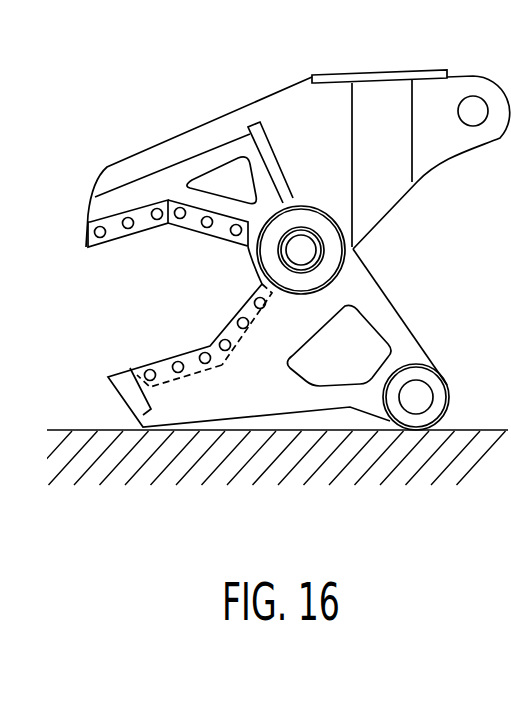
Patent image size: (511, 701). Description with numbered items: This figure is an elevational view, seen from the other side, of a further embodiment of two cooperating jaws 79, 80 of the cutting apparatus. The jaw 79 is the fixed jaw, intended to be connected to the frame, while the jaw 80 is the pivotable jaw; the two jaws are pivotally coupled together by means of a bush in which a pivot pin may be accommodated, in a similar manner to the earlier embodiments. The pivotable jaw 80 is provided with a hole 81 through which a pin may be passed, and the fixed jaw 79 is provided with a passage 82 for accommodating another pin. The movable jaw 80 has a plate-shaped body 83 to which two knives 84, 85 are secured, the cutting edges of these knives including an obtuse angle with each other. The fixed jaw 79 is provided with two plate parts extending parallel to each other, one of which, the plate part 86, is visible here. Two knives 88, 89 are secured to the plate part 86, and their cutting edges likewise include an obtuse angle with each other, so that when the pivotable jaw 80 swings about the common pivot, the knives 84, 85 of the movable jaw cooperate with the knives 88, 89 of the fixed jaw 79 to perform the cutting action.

The fixed jaw 79 is at (302, 380).
The pivotable jaw 80 is at (298, 159).
The hole 81 is at (470, 107).
The passage 82 is at (432, 392).
The plate-shaped body 83 is at (282, 108).
The knife 84 is at (194, 223).
The knife 85 is at (141, 230).
The plate part 86 is at (258, 397).
The knife 88 is at (243, 306).
The knife 89 is at (162, 363).